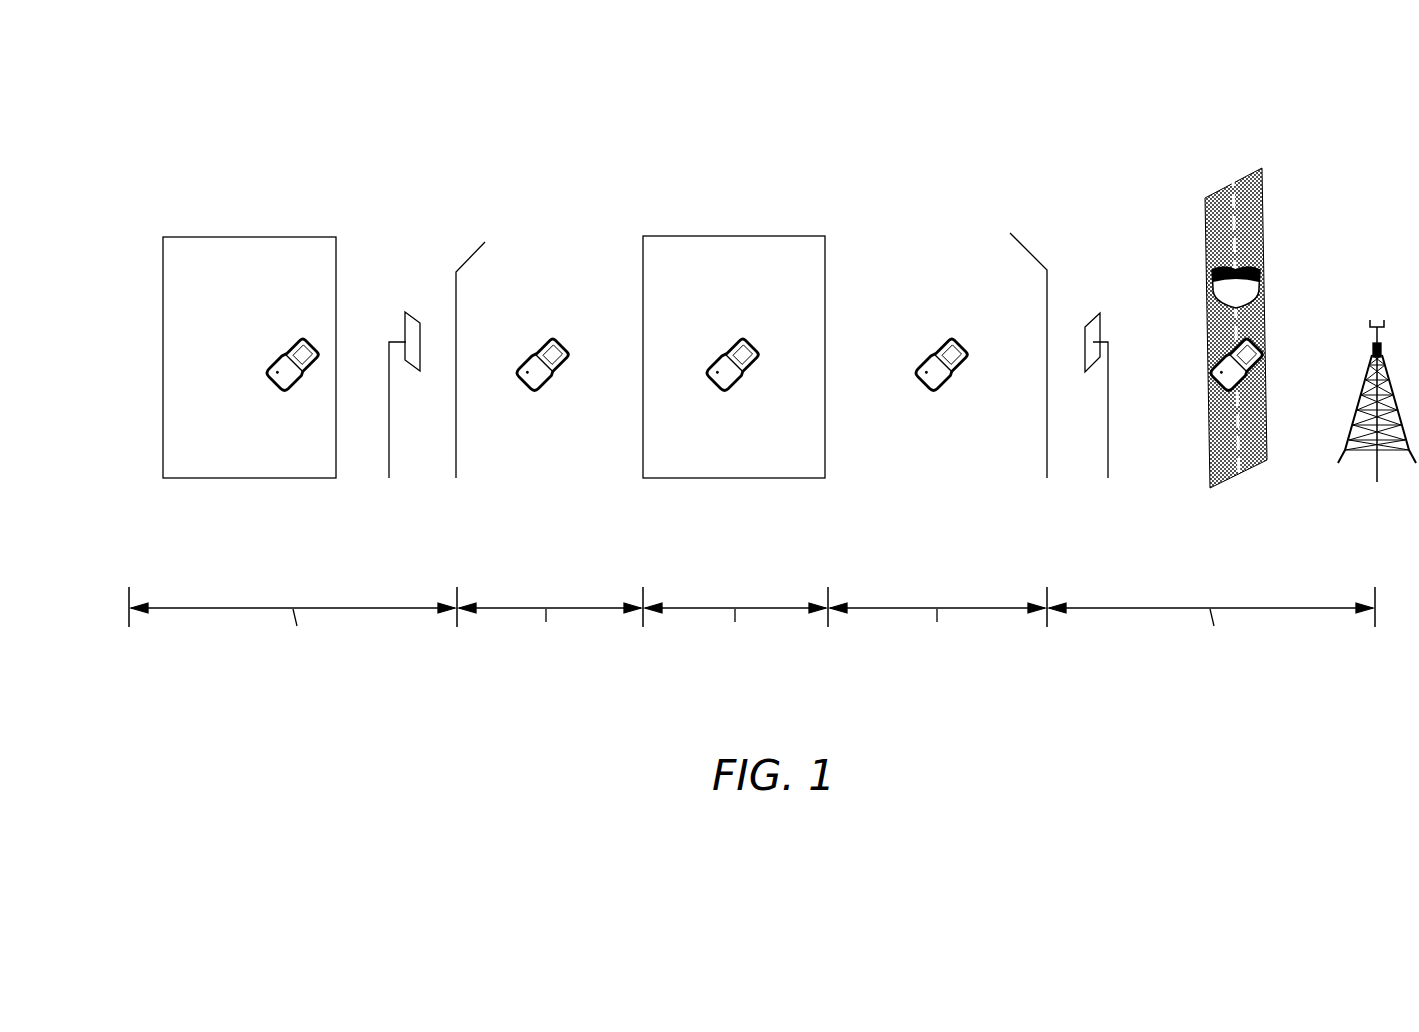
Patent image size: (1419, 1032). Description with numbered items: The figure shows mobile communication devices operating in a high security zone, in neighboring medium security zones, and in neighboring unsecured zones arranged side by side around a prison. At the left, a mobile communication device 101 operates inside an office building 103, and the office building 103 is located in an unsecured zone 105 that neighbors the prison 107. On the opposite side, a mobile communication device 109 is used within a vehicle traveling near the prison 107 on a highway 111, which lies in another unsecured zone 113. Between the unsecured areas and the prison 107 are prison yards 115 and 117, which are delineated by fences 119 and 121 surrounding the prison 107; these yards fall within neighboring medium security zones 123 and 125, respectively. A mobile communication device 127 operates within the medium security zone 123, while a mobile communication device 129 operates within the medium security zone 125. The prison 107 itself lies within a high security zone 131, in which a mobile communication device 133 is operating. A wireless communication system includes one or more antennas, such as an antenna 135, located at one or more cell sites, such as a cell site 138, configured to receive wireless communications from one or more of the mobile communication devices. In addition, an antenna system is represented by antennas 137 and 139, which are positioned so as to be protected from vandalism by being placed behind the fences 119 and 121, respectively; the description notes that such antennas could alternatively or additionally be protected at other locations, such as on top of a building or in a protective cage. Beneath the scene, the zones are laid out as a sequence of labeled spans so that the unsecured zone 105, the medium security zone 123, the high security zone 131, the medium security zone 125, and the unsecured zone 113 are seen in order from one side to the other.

The mobile communication device 101 is at (285, 352).
The office building 103 is at (247, 236).
The unsecured zone 105 is at (293, 620).
The prison 107 is at (731, 236).
The mobile communication device 109 is at (1242, 378).
The highway 111 is at (1207, 222).
The unsecured zone 113 is at (1211, 620).
The prison yard 115 is at (548, 383).
The prison yard 117 is at (938, 383).
The fence 119 is at (455, 290).
The fence 121 is at (1047, 292).
The medium security zone 123 is at (550, 630).
The medium security zone 125 is at (937, 630).
The mobile communication device 127 is at (533, 350).
The mobile communication device 129 is at (940, 345).
The high security zone 131 is at (735, 630).
The mobile communication device 133 is at (735, 345).
The antenna 135 is at (1369, 324).
The antenna 137 is at (413, 312).
The cell site 138 is at (1354, 428).
The antenna 139 is at (1102, 325).